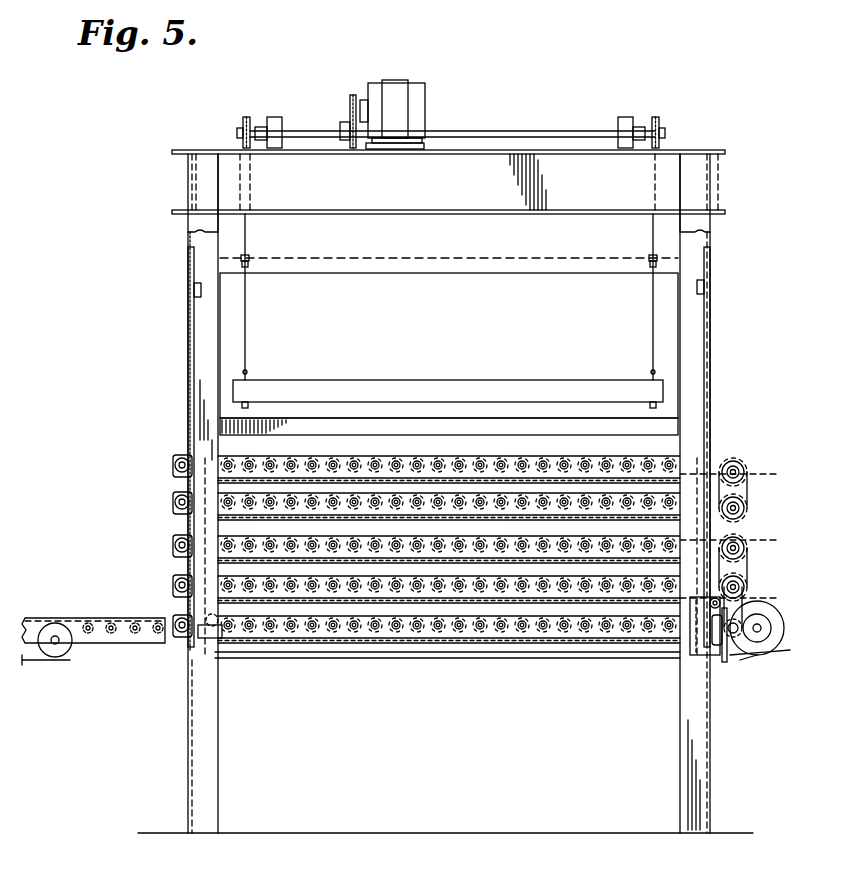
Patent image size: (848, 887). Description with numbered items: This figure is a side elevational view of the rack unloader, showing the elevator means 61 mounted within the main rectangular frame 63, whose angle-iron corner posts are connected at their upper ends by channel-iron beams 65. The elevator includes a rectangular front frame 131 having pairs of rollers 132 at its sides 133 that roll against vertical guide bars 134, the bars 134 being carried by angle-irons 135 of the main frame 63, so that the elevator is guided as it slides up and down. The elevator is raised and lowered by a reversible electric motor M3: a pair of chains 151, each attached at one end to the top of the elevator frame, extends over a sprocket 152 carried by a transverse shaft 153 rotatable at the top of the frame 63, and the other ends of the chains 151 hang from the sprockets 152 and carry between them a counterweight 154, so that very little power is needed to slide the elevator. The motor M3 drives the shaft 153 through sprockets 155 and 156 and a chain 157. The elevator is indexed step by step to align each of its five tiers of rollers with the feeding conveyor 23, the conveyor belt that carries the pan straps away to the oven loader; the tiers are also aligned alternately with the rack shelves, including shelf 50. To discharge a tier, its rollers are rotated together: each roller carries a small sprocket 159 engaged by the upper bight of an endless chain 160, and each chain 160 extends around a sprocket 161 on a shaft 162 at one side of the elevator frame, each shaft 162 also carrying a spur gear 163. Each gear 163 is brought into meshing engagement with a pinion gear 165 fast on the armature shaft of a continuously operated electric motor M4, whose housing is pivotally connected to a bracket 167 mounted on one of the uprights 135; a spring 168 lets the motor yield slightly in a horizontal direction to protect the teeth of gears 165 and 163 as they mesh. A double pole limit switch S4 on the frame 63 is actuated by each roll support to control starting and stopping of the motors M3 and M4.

The conveyor belt 23 is at (68, 655).
The shelf 50 is at (725, 327).
The elevator means 61 is at (186, 402).
The rectangular frame 63 is at (720, 180).
The channel-iron beams 65 is at (505, 214).
The rectangular front frame 131 is at (688, 370).
The rollers 132 is at (197, 290).
The sides 133 is at (205, 434).
The vertical guide bars 134 is at (200, 335).
The angle-irons 135 is at (205, 232).
The chains 151 is at (247, 305).
The sprocket 152 is at (246, 117).
The transverse shaft 153 is at (585, 131).
The counterweight 154 is at (546, 382).
The sprocket 155 is at (351, 98).
The sprocket 156 is at (346, 130).
The chain 157 is at (378, 149).
The small sprocket 159 is at (178, 463).
The endless chain 160 is at (370, 592).
The sprocket 161 is at (746, 535).
The shaft 162 is at (736, 490).
The spur gear 163 is at (745, 470).
The pinion gear 165 is at (768, 652).
The bracket 167 is at (705, 632).
The spring 168 is at (718, 650).
The reversible electric motor M3 is at (420, 90).
The continuously operated electric motor M4 is at (757, 655).
The double pole limit switch S4 is at (215, 640).